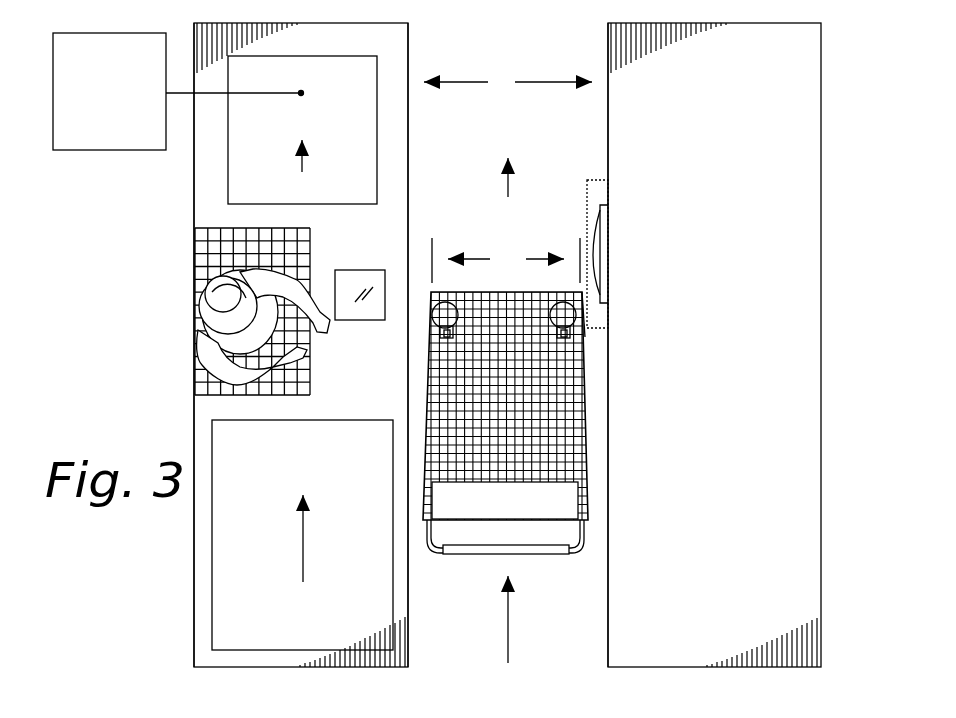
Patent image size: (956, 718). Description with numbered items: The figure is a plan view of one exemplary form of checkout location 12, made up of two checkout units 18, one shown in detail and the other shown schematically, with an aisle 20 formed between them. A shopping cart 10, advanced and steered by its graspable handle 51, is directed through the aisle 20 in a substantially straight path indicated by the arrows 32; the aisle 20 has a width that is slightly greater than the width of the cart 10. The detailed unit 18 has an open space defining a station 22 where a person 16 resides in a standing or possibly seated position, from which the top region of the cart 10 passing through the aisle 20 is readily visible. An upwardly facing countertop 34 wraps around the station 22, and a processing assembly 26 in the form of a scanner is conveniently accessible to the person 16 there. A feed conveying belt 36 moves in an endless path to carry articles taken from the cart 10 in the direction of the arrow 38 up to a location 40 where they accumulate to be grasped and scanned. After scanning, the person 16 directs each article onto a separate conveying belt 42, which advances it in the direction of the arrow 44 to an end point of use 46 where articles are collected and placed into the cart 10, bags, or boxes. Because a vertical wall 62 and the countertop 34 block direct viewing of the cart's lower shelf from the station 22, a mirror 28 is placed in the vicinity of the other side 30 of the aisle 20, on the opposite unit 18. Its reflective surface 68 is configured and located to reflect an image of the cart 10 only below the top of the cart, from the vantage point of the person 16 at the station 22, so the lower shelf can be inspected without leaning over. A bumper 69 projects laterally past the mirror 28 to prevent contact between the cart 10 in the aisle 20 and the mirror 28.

The shopping cart 10 is at (601, 420).
The checkout location 12 is at (570, 427).
The person 16 is at (204, 366).
The unit 18 is at (178, 706).
The aisle 20 is at (490, 240).
The station 22 is at (206, 253).
The processing assembly 26 is at (360, 262).
The mirror 28 is at (599, 226).
The other side of the aisle 30 is at (598, 122).
The arrows 32 is at (512, 188).
The countertop 34 is at (204, 512).
The feed conveying belt 36 is at (277, 622).
The arrow 38 is at (303, 530).
The accumulation location 40 is at (353, 418).
The separate conveying belt 42 is at (252, 148).
The arrow 44 is at (302, 172).
The end point of use 46 is at (158, 143).
The graspable handle 51 is at (464, 555).
The vertical wall 62 is at (409, 222).
The reflective surface 68 is at (595, 232).
The bumper 69 is at (583, 337).